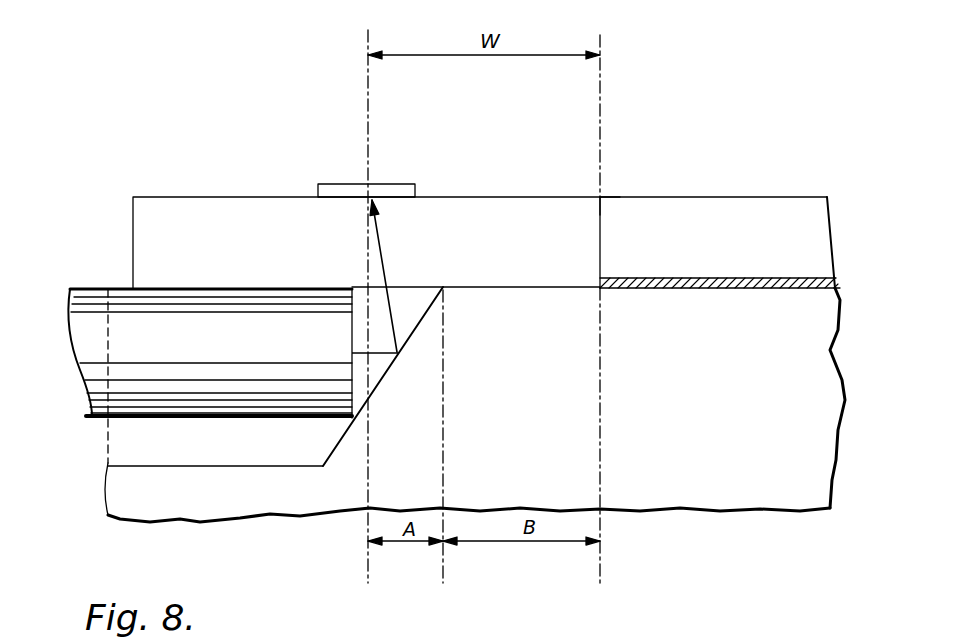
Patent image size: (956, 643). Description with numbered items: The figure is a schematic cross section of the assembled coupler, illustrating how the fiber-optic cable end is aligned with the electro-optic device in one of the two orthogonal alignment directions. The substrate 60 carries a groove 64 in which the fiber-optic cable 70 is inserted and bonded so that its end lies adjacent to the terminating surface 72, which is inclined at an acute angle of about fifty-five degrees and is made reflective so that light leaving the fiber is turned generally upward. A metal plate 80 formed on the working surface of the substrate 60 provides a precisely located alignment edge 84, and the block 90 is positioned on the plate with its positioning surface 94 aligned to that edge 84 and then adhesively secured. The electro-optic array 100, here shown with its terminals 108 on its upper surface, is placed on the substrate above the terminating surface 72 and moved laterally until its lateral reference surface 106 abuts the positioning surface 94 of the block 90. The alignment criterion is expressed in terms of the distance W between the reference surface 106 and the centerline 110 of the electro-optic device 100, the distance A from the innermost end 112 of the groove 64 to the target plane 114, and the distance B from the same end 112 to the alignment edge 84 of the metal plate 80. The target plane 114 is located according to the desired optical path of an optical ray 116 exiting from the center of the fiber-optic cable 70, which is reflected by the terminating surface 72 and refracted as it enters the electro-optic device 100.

The substrate 60 is at (750, 497).
The groove 64 is at (148, 440).
The fiber-optic cable 70 is at (90, 300).
The terminating surface 72 is at (432, 312).
The metal plate 80 is at (842, 275).
The alignment edge 84 is at (598, 283).
The block 90 is at (738, 210).
The positioning surface 94 is at (598, 237).
The electro-optic array 100 is at (200, 195).
The lateral reference surface 106 is at (603, 222).
The terminal 108 is at (334, 184).
The centerline 110 is at (368, 50).
The innermost end of groove 112 is at (443, 287).
The target plane 114 is at (370, 497).
The optical ray 116 is at (395, 352).